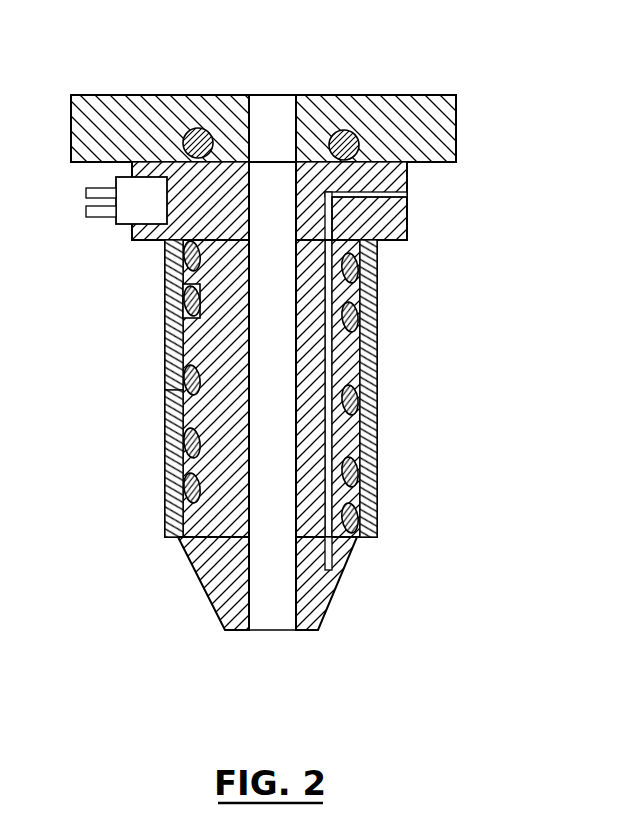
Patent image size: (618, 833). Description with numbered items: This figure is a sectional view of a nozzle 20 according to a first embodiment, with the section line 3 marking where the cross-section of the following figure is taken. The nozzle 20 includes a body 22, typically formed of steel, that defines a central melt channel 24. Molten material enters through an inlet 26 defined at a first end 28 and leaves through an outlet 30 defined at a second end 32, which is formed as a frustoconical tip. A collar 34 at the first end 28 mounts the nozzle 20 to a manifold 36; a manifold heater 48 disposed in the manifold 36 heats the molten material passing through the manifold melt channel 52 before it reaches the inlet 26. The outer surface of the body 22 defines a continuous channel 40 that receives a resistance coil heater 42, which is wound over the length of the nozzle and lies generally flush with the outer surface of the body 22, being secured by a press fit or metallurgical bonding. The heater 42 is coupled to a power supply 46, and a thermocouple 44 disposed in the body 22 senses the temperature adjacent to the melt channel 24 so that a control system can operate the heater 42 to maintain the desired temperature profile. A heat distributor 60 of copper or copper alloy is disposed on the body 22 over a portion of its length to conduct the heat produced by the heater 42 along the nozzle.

The nozzle 20 is at (490, 337).
The body 22 is at (172, 353).
The melt channel 24 is at (270, 410).
The inlet 26 is at (243, 108).
The first end 28 is at (390, 175).
The outlet 30 is at (275, 615).
The second end 32 is at (213, 572).
The collar 34 is at (410, 212).
The manifold 36 is at (387, 107).
The continuous channel 40 is at (166, 332).
The coil heater 42 is at (167, 317).
The thermocouple 44 is at (345, 420).
The power supply 46 is at (86, 200).
The manifold heater 48 is at (340, 130).
The manifold melt channel 52 is at (278, 110).
The heat distributor 60 is at (170, 495).
The section line 3- 3 is at (160, 268).